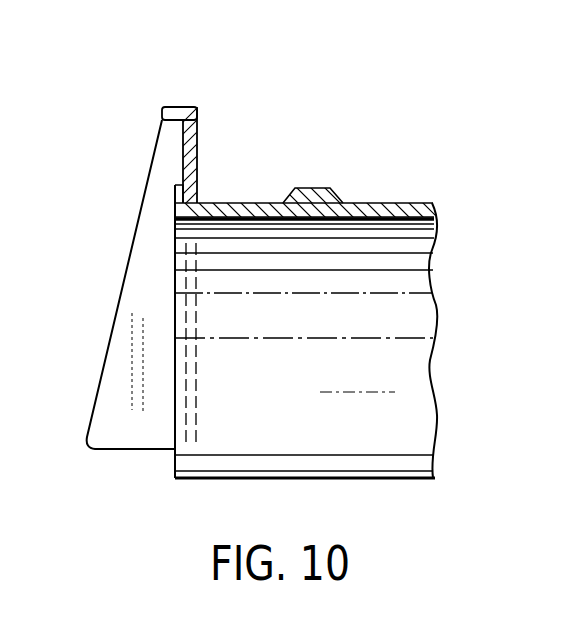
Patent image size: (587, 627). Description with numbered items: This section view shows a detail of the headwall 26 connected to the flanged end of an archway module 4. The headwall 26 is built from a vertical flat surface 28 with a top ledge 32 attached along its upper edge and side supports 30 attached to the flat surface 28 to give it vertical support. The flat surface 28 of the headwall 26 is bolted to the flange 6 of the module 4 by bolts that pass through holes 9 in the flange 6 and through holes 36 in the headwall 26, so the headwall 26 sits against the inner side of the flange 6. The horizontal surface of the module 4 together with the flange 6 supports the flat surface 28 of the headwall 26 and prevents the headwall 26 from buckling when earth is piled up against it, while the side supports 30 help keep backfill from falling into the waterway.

The module 4 is at (342, 183).
The flange 6 is at (182, 325).
The holes 9 is at (170, 194).
The headwall 26 is at (116, 293).
The flat surface 28 is at (199, 140).
The side supports 30 is at (126, 350).
The top ledge 32 is at (178, 105).
The holes 36 is at (192, 190).